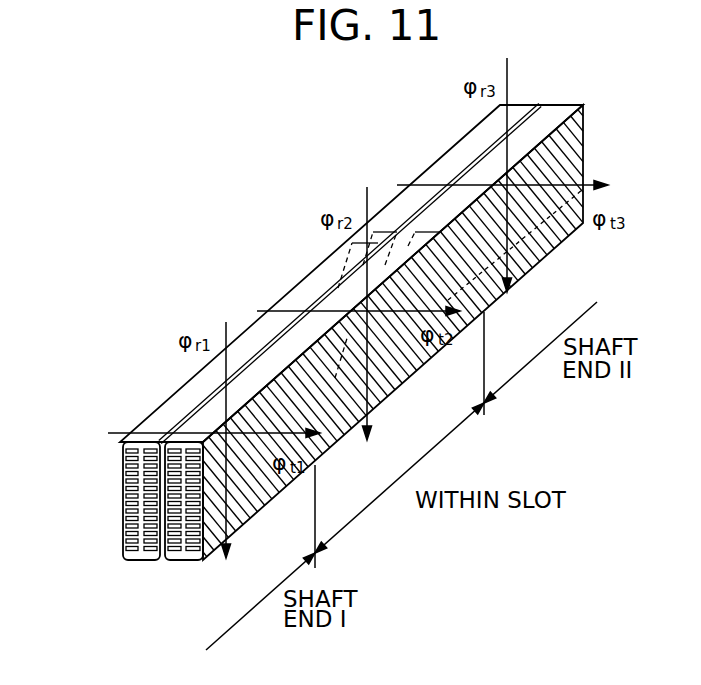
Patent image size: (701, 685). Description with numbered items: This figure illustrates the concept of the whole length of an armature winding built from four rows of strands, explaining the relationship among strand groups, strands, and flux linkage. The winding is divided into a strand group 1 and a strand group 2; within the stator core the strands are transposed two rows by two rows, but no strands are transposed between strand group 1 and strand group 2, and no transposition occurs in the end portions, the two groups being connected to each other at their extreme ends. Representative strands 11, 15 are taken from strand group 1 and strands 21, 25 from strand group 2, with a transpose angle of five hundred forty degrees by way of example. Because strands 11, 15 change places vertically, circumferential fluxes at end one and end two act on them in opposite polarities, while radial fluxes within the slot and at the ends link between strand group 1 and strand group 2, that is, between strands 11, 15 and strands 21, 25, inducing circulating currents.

The strand group 1 is at (312, 340).
The strand group 2 is at (263, 340).
The strand 11 is at (196, 450).
The strand 15 is at (145, 437).
The strand 21 is at (123, 458).
The strand 25 is at (123, 498).